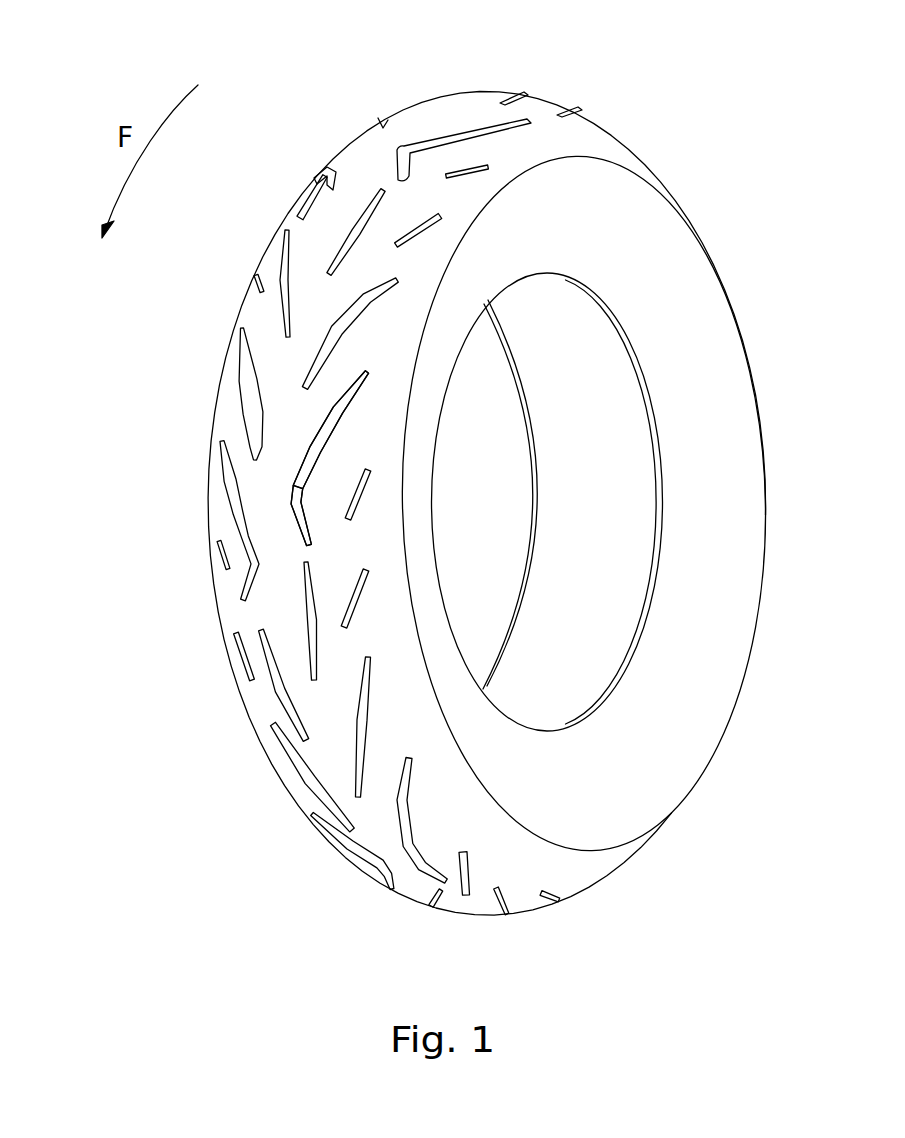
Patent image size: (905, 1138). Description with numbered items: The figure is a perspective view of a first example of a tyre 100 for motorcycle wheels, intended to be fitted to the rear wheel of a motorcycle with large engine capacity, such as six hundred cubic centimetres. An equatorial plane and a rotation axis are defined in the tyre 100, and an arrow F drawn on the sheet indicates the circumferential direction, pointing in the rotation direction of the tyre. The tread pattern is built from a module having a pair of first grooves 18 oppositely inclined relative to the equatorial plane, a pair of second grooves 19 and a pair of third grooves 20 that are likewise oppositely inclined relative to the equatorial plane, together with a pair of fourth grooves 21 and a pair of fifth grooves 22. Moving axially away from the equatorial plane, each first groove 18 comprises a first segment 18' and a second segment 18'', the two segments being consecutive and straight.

The tyre 100 is at (707, 127).
The first groove 18 is at (305, 486).
The first segment 18' is at (239, 430).
The second segment 18'' is at (209, 517).
The second groove 19 is at (362, 207).
The third groove 20 is at (337, 317).
The fourth groove 21 is at (217, 555).
The fifth groove 22 is at (360, 593).